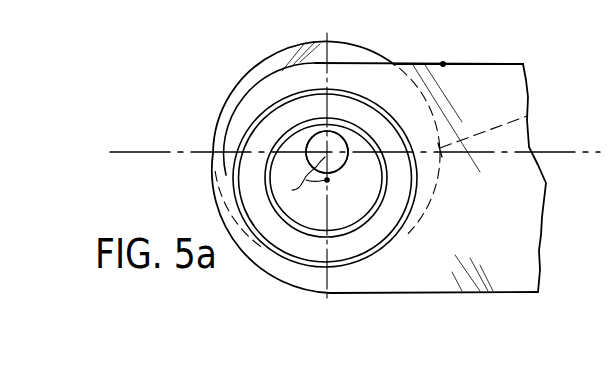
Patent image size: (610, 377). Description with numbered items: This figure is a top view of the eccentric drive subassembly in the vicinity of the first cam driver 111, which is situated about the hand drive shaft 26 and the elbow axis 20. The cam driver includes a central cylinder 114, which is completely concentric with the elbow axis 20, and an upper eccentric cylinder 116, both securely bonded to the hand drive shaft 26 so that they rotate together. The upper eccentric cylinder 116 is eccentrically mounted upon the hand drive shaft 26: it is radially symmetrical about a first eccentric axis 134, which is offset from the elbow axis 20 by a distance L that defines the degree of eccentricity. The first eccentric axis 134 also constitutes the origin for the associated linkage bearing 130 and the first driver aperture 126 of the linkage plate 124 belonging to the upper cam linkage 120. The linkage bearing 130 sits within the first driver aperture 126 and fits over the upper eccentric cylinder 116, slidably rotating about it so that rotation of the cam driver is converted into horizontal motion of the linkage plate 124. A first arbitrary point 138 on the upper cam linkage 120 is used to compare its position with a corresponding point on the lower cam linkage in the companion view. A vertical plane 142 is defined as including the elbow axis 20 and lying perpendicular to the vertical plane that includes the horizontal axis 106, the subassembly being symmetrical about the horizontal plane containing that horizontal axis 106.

The first cam driver 111 is at (233, 70).
The upper cam linkage 120 is at (497, 100).
The first arbitrary point 138 is at (443, 64).
The linkage plate 124 is at (528, 192).
The central cylinder 114 is at (527, 116).
The first driver aperture 126 is at (232, 182).
The linkage bearing 130 is at (287, 247).
The upper eccentric cylinder 116 is at (368, 197).
The first eccentric axis 134 is at (327, 180).
The vertical plane 142 is at (327, 33).
The horizontal axis 106 is at (125, 152).
The hand drive shaft 26 is at (338, 161).
The elbow axis 20 is at (327, 152).
The distance L is at (302, 178).